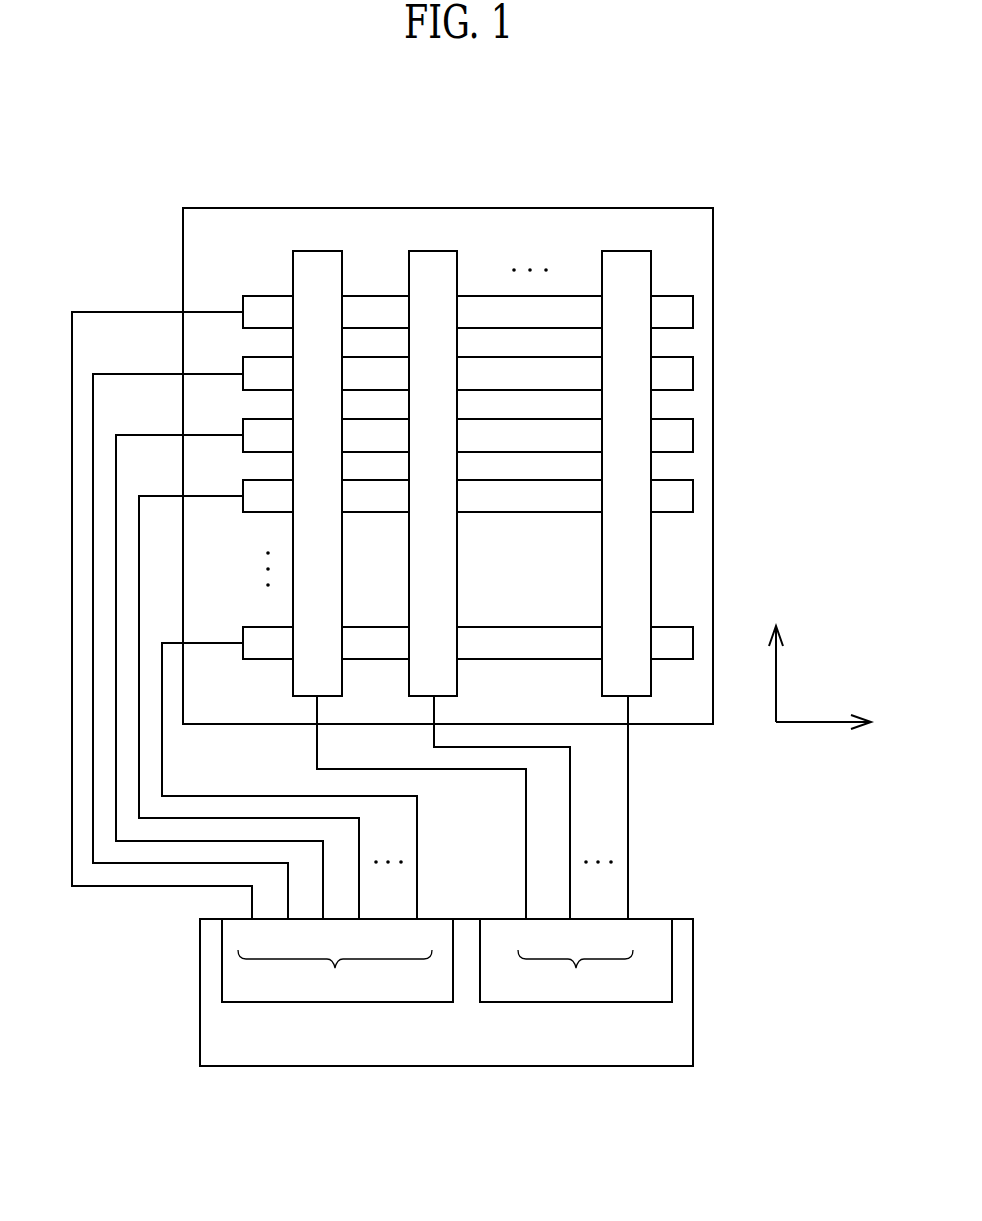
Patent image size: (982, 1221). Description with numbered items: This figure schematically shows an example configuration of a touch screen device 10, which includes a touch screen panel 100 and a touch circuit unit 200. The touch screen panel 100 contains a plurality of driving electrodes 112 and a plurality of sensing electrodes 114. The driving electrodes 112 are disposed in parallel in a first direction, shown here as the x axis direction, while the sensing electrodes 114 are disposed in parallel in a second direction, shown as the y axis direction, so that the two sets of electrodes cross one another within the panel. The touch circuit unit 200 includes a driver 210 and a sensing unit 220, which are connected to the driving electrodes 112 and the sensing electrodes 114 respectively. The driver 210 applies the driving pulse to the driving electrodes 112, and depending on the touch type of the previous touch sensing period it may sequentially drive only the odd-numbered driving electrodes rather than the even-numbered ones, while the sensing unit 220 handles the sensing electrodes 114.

The touch screen device 10 is at (258, 116).
The touch screen panel 100 is at (548, 208).
The driving electrodes 112 is at (693, 306).
The sensing electrodes 114 is at (458, 266).
The touch circuit unit 200 is at (693, 1022).
The driver 210 is at (222, 965).
The sensing unit 220 is at (672, 965).